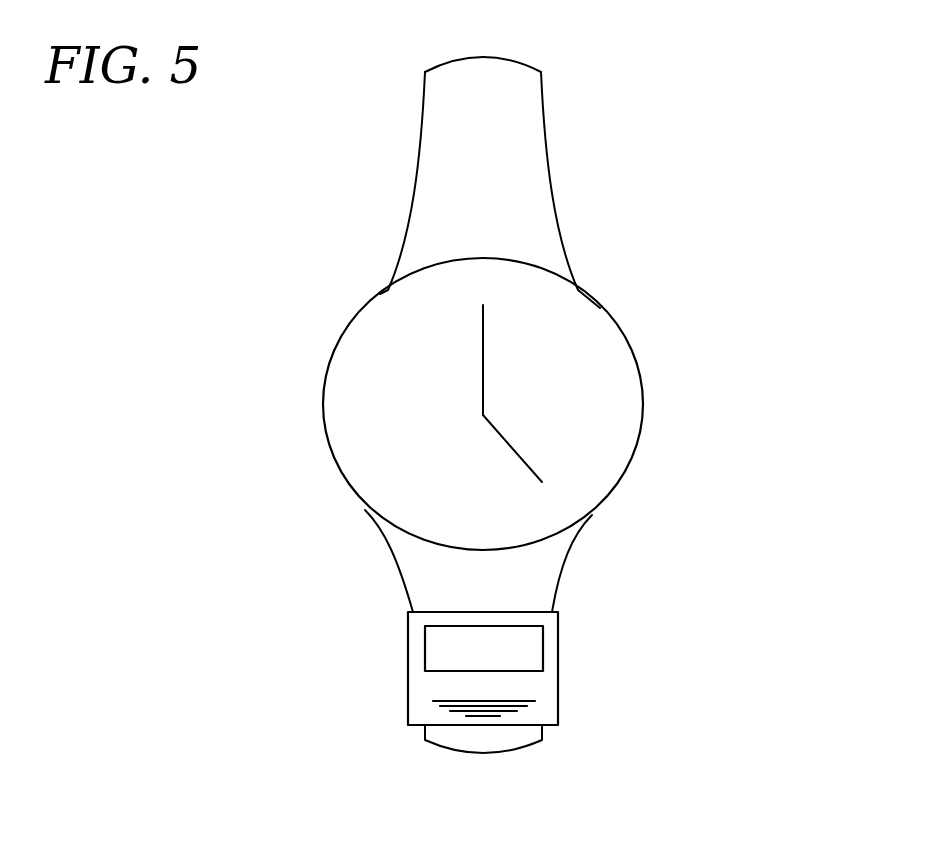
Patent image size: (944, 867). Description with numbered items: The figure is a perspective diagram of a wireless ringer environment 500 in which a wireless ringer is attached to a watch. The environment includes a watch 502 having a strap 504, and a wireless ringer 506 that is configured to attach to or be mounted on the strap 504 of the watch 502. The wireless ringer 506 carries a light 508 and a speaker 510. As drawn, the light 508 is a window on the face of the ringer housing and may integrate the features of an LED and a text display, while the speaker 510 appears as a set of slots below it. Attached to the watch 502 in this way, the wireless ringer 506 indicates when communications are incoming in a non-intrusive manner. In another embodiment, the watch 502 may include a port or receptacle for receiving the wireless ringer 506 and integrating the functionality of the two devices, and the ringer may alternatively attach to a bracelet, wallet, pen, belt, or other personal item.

The wireless ringer environment 500 is at (695, 87).
The watch 502 is at (636, 337).
The strap 504 is at (462, 585).
The wireless ringer 506 is at (566, 658).
The light 508 is at (447, 644).
The speaker 510 is at (432, 701).